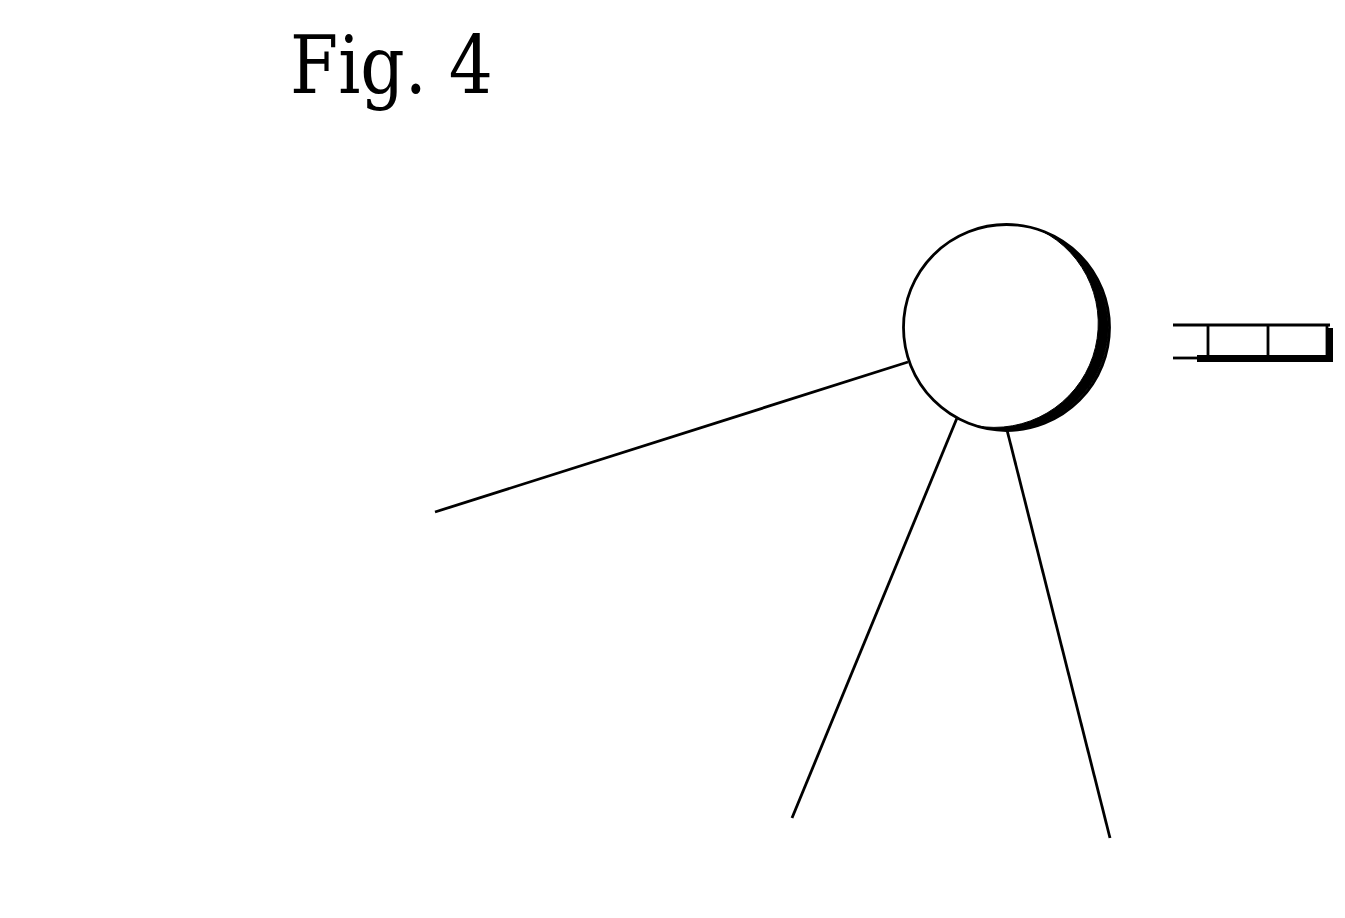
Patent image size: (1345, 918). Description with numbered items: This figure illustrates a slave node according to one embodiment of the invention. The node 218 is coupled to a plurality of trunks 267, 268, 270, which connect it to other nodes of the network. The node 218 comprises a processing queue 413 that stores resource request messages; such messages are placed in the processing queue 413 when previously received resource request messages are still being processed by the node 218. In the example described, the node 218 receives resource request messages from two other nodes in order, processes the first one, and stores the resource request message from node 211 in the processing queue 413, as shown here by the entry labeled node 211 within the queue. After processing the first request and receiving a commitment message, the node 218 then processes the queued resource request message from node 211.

The node 218 is at (1030, 229).
The trunk 267 is at (788, 399).
The trunk 268 is at (893, 570).
The trunk 270 is at (1062, 642).
The processing queue 413 is at (1255, 323).
The node 211 is at (1297, 341).